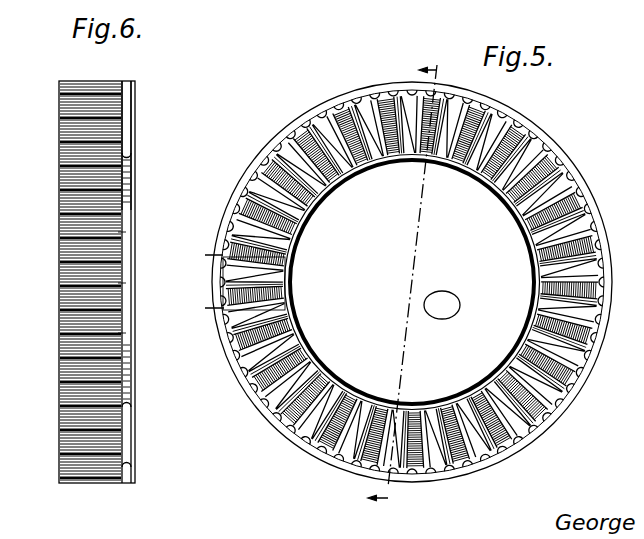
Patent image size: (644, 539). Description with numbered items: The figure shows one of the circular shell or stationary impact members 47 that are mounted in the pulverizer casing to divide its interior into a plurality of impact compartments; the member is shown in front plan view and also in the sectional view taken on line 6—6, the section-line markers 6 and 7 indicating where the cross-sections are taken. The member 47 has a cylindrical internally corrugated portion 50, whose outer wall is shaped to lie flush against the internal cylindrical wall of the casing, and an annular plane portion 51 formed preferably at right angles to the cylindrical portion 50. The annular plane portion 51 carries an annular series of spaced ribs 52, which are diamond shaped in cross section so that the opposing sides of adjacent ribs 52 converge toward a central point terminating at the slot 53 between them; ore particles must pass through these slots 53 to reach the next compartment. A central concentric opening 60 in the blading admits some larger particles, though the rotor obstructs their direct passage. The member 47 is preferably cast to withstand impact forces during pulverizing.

In FIG. 6, the stationary impact member 47 is at (106, 494).
In FIG. 5, the stationary impact member 47 is at (550, 127).
In FIG. 6, the cylindrical internally corrugated portion 50 is at (61, 81).
In FIG. 5, the cylindrical internally corrugated portion 50 is at (353, 160).
In FIG. 6, the annular plane portion 51 is at (142, 151).
In FIG. 5, the annular plane portion 51 is at (369, 165).
In FIG. 6, the rib 52 is at (133, 120).
In FIG. 5, the rib 52 is at (350, 162).
In FIG. 5, the slot 53 is at (340, 113).
In FIG. 5, the central concentric opening 60 is at (442, 305).
In FIG. 5, the section line 6- 6 is at (407, 285).
In FIG. 5, the section region 7 is at (237, 276).